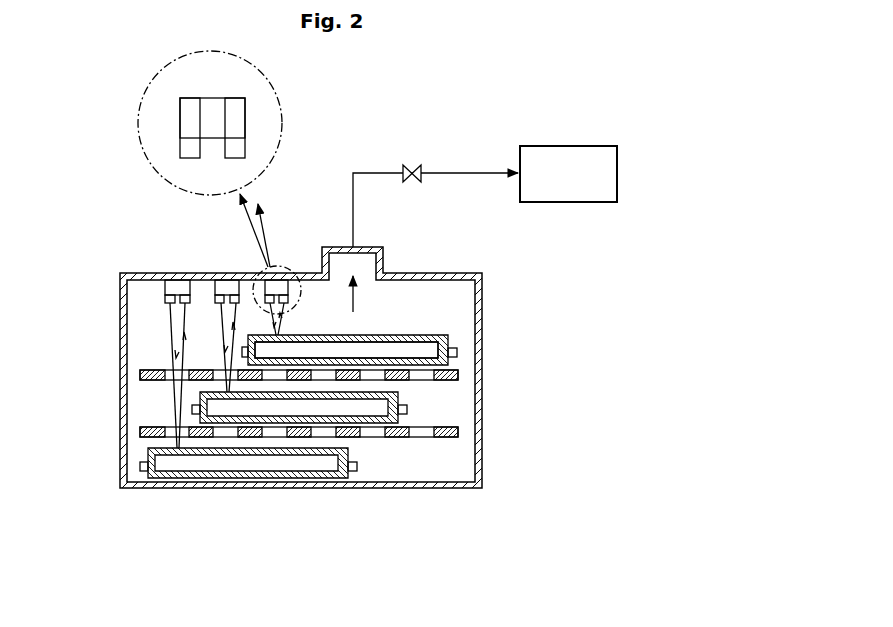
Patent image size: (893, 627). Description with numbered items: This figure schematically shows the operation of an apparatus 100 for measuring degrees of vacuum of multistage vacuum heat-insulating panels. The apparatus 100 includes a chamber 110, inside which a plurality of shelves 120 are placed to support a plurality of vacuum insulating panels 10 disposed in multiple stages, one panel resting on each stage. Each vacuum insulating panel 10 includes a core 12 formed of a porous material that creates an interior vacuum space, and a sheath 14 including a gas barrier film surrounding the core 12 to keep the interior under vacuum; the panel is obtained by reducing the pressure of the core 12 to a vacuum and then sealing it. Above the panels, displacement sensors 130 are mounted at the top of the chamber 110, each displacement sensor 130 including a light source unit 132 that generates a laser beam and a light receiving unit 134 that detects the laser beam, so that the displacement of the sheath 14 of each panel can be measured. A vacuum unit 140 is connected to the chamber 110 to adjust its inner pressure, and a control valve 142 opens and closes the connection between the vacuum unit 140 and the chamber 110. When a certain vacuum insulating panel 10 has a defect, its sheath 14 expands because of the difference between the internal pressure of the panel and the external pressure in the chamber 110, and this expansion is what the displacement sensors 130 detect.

The apparatus for measuring degrees of vacuum 100 is at (360, 533).
The chamber 110 is at (116, 397).
The shelves 120 is at (464, 378).
The displacement sensor 130 is at (211, 249).
The light source unit 132 is at (190, 148).
The light receiving unit 134 is at (238, 148).
The vacuum unit 140 is at (570, 143).
The control valve 142 is at (410, 162).
The vacuum insulating panel 10 is at (352, 400).
The core 12 is at (447, 362).
The sheath 14 is at (447, 340).